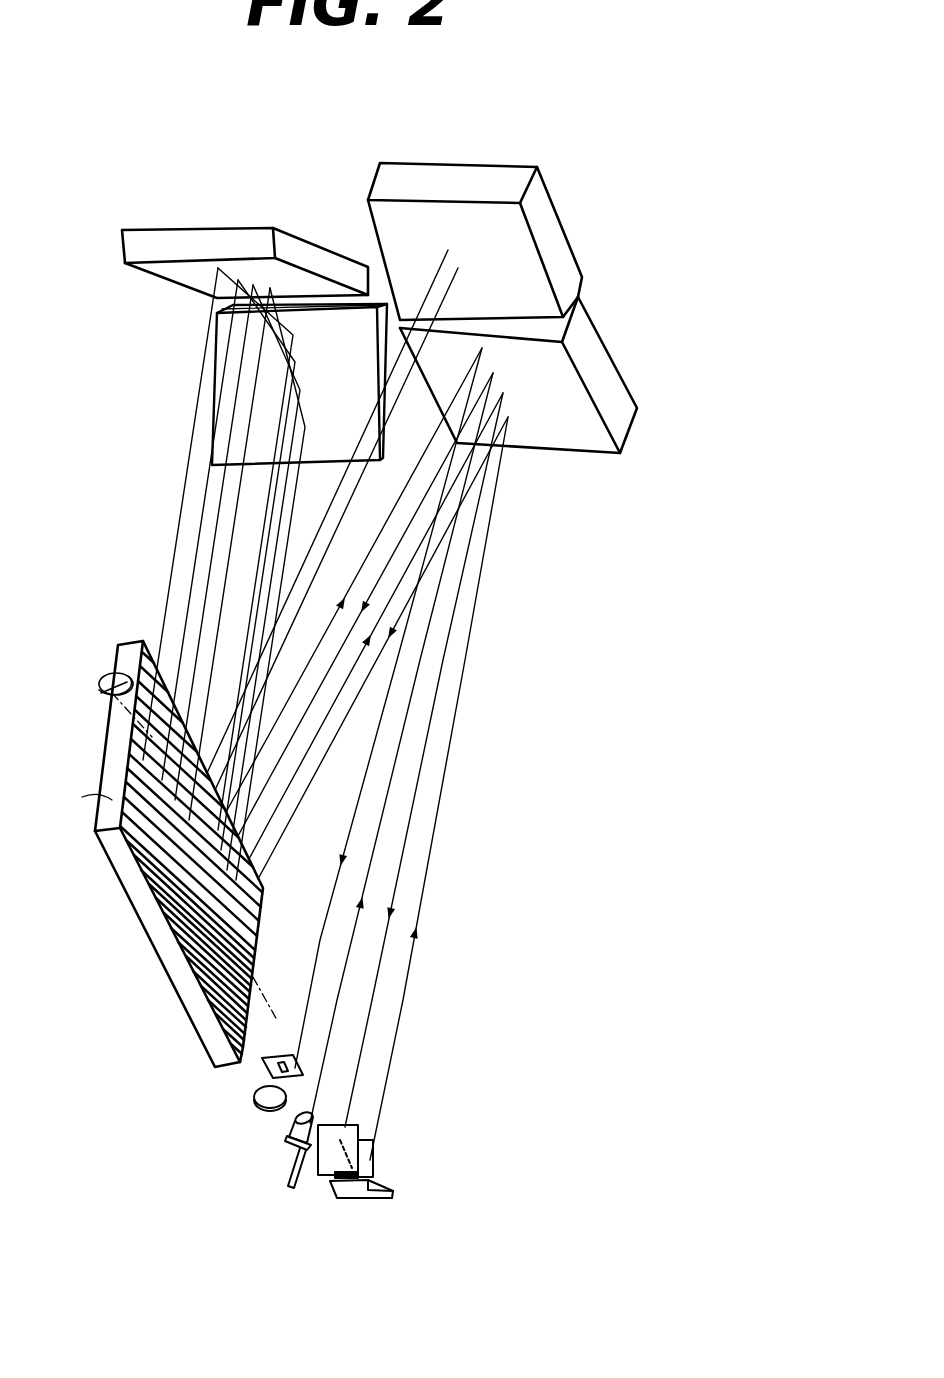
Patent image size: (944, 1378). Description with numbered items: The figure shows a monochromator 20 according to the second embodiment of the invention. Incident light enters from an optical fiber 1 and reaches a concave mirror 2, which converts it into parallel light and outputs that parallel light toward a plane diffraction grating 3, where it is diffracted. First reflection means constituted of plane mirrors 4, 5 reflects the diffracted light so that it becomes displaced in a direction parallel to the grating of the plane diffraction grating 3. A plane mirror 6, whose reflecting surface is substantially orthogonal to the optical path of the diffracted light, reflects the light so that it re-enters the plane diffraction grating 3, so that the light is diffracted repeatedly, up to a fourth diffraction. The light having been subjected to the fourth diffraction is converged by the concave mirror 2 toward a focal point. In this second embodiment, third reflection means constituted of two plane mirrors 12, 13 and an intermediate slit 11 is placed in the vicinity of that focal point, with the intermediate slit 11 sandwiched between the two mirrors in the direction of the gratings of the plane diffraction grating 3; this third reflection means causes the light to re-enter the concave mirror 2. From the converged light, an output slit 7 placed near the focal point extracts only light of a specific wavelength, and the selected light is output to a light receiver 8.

The optical fiber 1 is at (292, 1130).
The concave mirror 2 is at (607, 367).
The plane diffraction grating 3 is at (110, 797).
The plane mirror 4 is at (325, 327).
The plane mirror 5 is at (130, 246).
The plane mirror 6 is at (557, 245).
The output slit 7 is at (275, 1055).
The light receiver 8 is at (255, 1097).
The intermediate slit 11 is at (345, 1143).
The plane mirror 12 is at (322, 1160).
The plane mirror 13 is at (363, 1197).
The monochromator 20 is at (519, 99).